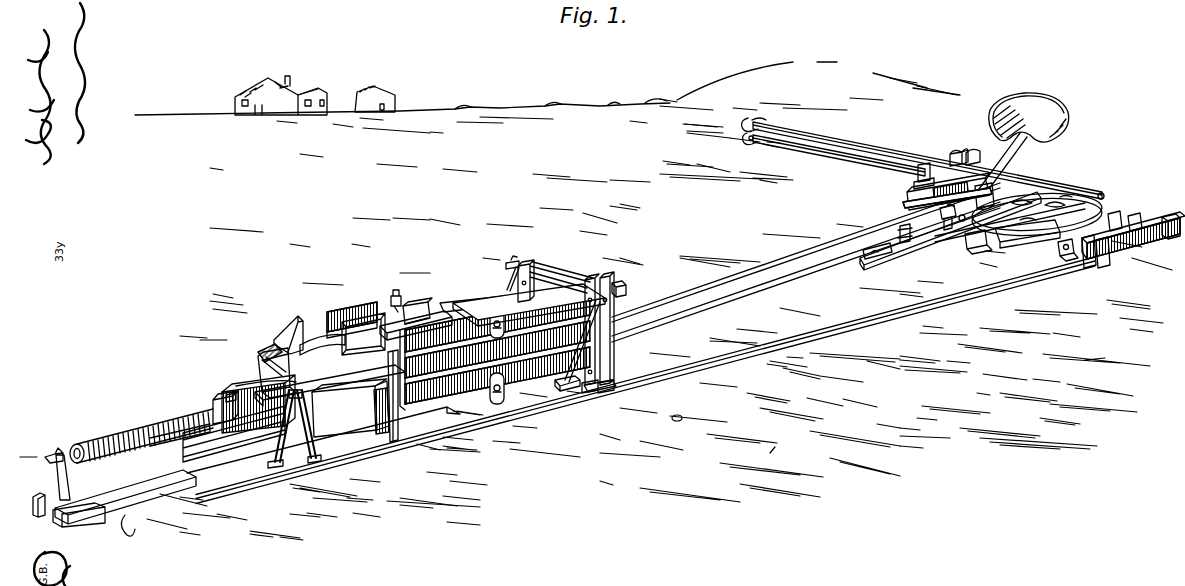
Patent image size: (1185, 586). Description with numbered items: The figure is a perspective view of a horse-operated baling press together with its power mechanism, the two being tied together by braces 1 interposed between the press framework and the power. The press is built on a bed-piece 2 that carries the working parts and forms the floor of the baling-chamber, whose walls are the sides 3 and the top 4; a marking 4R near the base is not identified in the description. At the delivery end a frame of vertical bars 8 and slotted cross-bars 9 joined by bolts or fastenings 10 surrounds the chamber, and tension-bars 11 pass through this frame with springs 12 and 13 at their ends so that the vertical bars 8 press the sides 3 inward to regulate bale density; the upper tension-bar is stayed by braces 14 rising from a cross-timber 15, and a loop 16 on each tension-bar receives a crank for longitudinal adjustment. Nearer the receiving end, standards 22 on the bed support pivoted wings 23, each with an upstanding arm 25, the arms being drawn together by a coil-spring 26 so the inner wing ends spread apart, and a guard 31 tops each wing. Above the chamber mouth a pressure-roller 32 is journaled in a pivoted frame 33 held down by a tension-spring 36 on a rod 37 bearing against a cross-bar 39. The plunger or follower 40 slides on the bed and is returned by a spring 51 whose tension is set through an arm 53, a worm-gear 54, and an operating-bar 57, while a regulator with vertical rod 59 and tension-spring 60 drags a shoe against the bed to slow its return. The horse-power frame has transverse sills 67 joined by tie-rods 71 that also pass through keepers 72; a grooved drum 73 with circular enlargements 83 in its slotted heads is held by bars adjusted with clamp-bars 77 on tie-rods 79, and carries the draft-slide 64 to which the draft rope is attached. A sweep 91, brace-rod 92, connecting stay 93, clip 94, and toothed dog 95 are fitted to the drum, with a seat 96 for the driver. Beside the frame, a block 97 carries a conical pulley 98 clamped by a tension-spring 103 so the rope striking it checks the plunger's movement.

The braces 1 is at (690, 292).
The bed-piece 2 is at (199, 465).
The sides 3 is at (534, 334).
The top 4 is at (529, 305).
The base box 4R is at (256, 468).
The vertical bars 8 is at (532, 275).
The cross-bars 9 is at (562, 285).
The bolts or fastenings 10 is at (505, 287).
The tension-bars 11 is at (580, 284).
The spring 12 is at (586, 385).
The spring 13 is at (617, 297).
The braces 14 is at (545, 352).
The cross-timber 15 is at (556, 384).
The loop 16 is at (508, 266).
The standards 22 is at (294, 430).
The wings 23 is at (355, 396).
The arm 25 is at (258, 366).
The coil-spring 26 is at (260, 354).
The guard 31 is at (288, 338).
The pressure-roller 32 is at (363, 334).
The pivoted frame 33 is at (428, 324).
The tension-spring 36 is at (404, 310).
The rod 37 is at (398, 298).
The cross-bar 39 is at (372, 307).
The plunger or follower 40 is at (254, 411).
The spring 51 is at (124, 440).
The arm 53 is at (71, 464).
The worm-gear 54 is at (60, 496).
The operating-bar 57 is at (66, 457).
The vertical rod 59 is at (230, 394).
The tension-spring 60 is at (220, 406).
The draft-slide 64 is at (1010, 228).
The transverse sills 67 is at (1021, 244).
The tie-rods 71 is at (1064, 255).
The keepers 72 is at (1117, 215).
The drum 73 is at (1037, 215).
The clamp-bars 77 is at (921, 200).
The tie-rods 79 is at (1080, 244).
The circular enlargements 83 is at (985, 203).
The sweep 91 is at (859, 156).
The brace-rod 92 is at (892, 147).
The stay 93 is at (950, 156).
The clip 94 is at (915, 181).
The toothed dog 95 is at (971, 151).
The seat 96 is at (1036, 95).
The block 97 is at (918, 254).
The pulley 98 is at (952, 228).
The tension-spring 103 is at (900, 236).